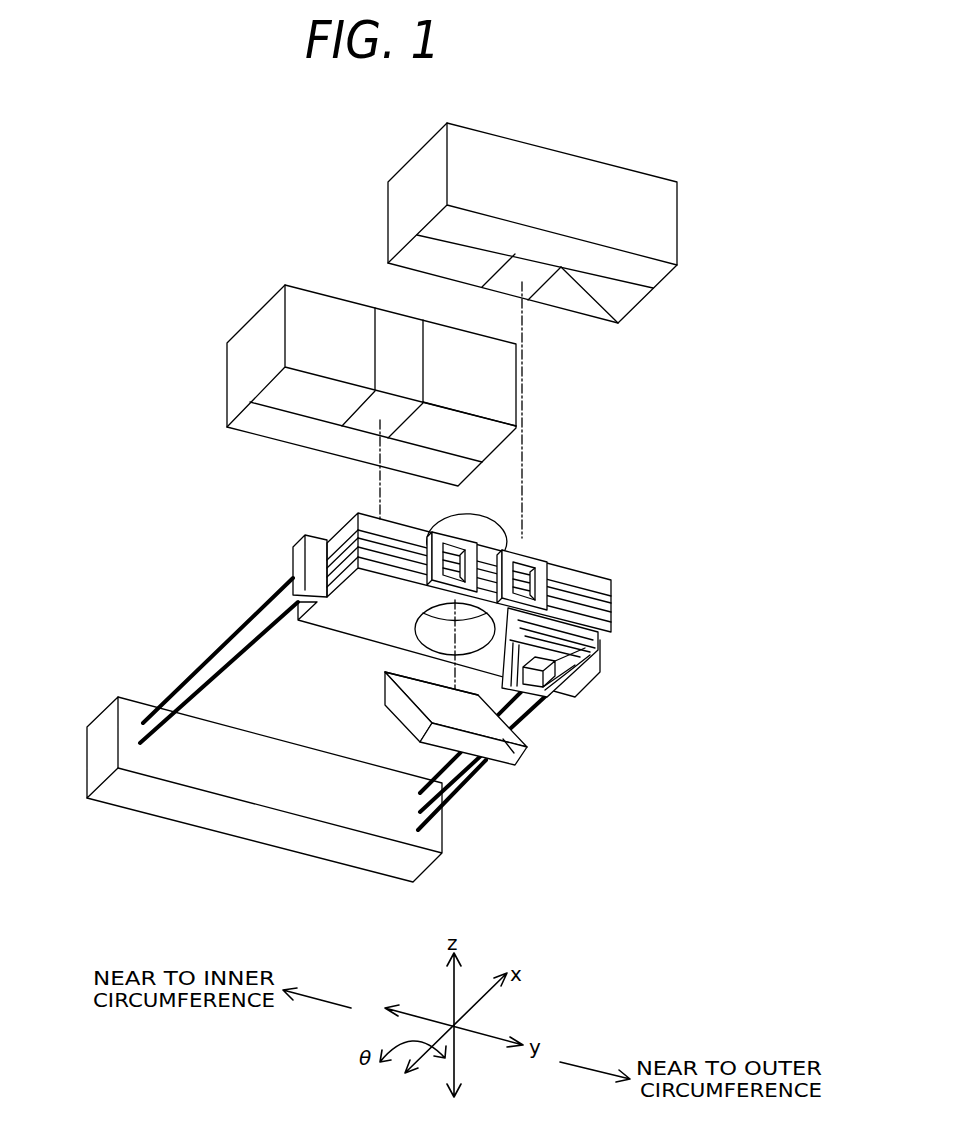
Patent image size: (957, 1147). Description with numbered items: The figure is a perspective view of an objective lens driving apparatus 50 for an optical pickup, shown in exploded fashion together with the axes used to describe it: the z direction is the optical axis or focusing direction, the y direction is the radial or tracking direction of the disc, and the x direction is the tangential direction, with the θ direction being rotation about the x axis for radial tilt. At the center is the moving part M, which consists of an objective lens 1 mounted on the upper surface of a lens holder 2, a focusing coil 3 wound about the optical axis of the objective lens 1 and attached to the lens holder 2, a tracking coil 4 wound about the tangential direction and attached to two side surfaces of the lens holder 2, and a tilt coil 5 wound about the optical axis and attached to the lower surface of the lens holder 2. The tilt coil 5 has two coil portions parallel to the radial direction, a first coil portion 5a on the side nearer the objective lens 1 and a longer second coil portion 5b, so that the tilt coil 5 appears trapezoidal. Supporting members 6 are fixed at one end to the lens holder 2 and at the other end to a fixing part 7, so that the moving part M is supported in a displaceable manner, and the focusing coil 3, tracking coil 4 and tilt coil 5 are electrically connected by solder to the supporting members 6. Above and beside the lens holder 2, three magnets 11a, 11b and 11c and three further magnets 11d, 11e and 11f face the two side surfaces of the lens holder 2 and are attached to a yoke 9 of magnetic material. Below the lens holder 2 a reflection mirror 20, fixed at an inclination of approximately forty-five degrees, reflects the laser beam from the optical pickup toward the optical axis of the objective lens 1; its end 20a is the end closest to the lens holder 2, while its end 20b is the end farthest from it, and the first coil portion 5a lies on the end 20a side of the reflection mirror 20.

The objective lens driving apparatus 50 is at (58, 418).
The yoke 9 is at (627, 181).
The magnet 11a is at (423, 247).
The magnet 11b is at (537, 281).
The magnet 11c is at (623, 300).
The magnet 11d is at (297, 313).
The magnet 11e is at (400, 324).
The magnet 11f is at (503, 386).
The objective lens 1 is at (470, 543).
The tracking coil 4 is at (505, 537).
The lens holder 2 is at (578, 578).
The focusing coil 3 is at (610, 603).
The moving part M is at (697, 572).
The tilt coil 5 is at (587, 680).
The first coil portion 5a is at (542, 707).
The second coil portion 5b is at (598, 652).
The supporting member 6 is at (218, 702).
The fixing part 7 is at (180, 813).
The reflection mirror 20 is at (457, 721).
The end of reflection mirror 20a is at (422, 685).
The end of reflection mirror 20b is at (517, 757).